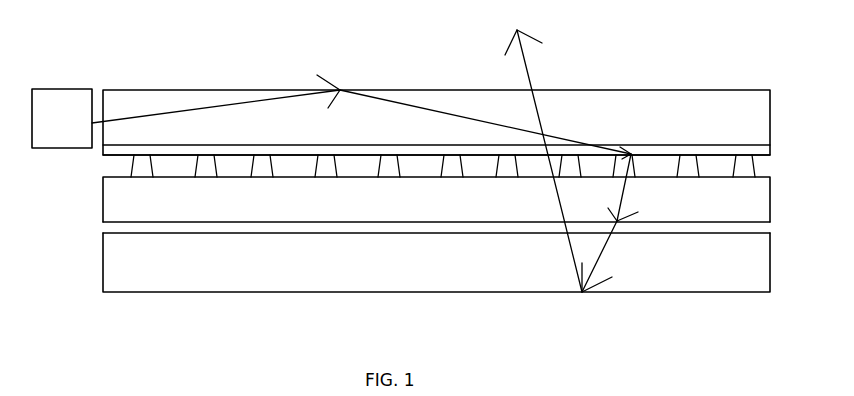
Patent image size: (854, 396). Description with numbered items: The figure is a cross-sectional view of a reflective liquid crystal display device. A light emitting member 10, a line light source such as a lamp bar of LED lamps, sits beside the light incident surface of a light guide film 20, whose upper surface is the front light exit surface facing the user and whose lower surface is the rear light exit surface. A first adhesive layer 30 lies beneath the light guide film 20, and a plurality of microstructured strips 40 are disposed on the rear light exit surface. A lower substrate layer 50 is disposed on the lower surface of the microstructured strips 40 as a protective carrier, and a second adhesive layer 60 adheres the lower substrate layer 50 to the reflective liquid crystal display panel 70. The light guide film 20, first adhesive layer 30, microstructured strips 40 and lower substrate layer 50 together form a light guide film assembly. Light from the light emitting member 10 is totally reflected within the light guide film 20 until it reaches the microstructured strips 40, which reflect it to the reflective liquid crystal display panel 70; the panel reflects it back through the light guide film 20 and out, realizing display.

The light emitting member 10 is at (60, 110).
The light guide film 20 is at (755, 102).
The first adhesive layer 30 is at (767, 150).
The microstructured strips 40 is at (750, 168).
The lower substrate layer 50 is at (757, 192).
The second adhesive layer 60 is at (760, 228).
The reflective liquid crystal display panel 70 is at (757, 267).